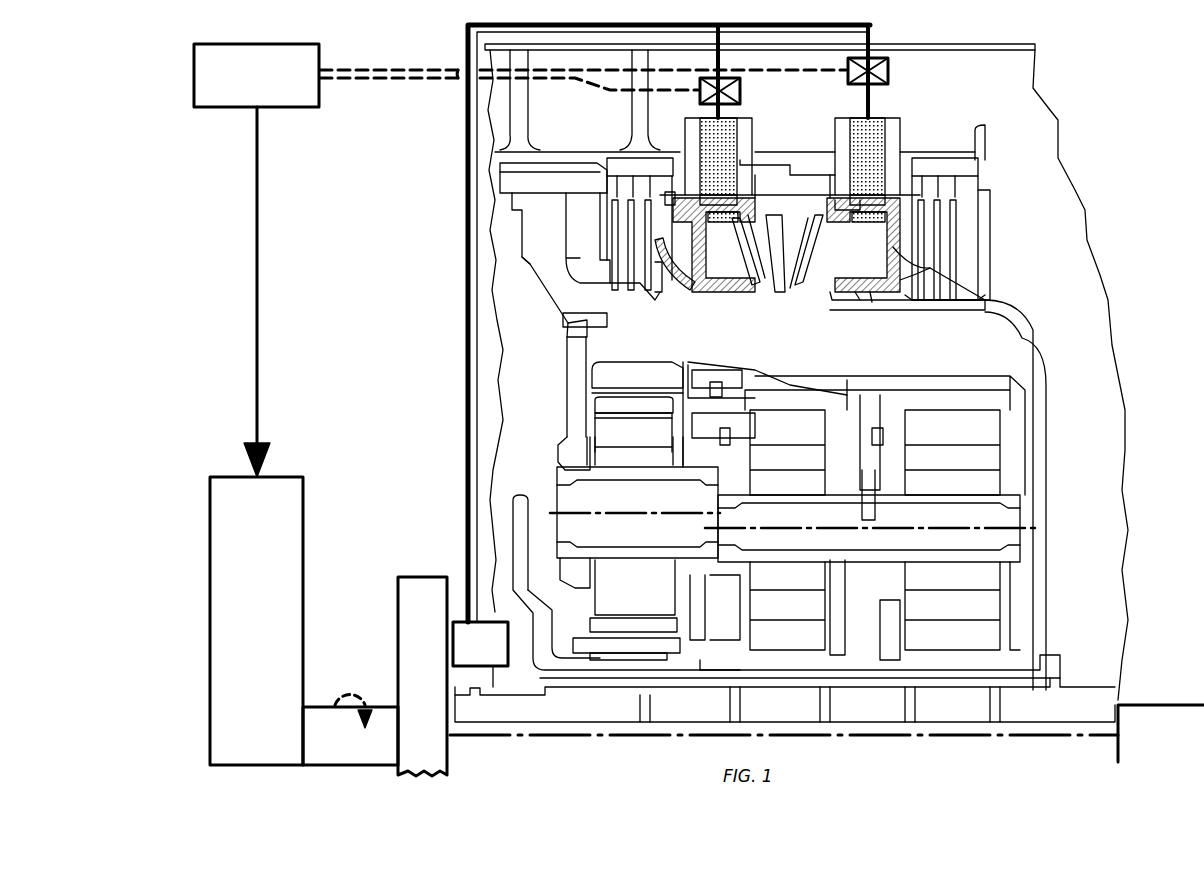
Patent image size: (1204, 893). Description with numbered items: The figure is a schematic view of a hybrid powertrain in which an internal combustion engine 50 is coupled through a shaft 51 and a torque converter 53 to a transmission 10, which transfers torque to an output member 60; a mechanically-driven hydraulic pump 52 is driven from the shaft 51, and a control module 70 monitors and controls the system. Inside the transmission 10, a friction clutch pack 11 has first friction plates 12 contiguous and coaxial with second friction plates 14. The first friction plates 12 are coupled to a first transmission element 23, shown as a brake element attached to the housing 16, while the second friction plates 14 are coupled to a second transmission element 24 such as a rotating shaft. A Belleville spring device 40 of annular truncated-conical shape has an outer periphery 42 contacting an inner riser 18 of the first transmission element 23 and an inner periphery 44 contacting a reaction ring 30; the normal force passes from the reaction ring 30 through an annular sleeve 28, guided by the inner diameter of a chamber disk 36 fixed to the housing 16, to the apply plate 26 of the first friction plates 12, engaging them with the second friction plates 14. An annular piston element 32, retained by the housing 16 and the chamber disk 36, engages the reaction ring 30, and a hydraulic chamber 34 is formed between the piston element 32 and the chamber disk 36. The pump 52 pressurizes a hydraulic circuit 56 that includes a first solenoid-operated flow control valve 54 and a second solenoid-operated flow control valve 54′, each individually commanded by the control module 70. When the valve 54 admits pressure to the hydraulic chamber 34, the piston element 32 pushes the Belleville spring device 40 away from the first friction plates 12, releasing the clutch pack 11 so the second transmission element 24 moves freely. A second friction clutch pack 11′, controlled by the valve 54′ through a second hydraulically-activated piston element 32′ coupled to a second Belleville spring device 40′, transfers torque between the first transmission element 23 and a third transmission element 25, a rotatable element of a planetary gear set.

The transmission 10 is at (1048, 222).
The friction clutch pack 11 is at (985, 265).
The second friction clutch pack 11′ is at (573, 247).
The first friction plate 12 is at (975, 237).
The second friction plate 14 is at (933, 302).
The housing 16 is at (796, 192).
The inner riser 18 is at (764, 235).
The first transmission element 23 is at (632, 162).
The second transmission element 24 is at (1003, 325).
The third transmission element 25 is at (638, 300).
The apply plate 26 is at (930, 272).
The annular sleeve 28 is at (875, 290).
The reaction ring 30 is at (826, 280).
The piston element 32 is at (850, 225).
The second hydraulically-activated piston element 32′ is at (765, 165).
The hydraulic chamber 34 is at (840, 200).
The chamber disk 36 is at (864, 283).
The Belleville spring device 40 is at (806, 252).
The second Belleville spring device 40′ is at (740, 272).
The outer periphery 42 is at (772, 255).
The inner periphery 44 is at (820, 272).
The internal combustion engine 50 is at (268, 629).
The shaft 51 is at (354, 745).
The mechanically-driven hydraulic pump 52 is at (490, 653).
The torque converter 53 is at (432, 705).
The solenoid-operated flow control valve 54 is at (895, 70).
The second solenoid-operated flow control valve 54′ is at (748, 92).
The hydraulic circuit 56 is at (880, 30).
The output member 60 is at (1176, 745).
The control module 70 is at (268, 87).